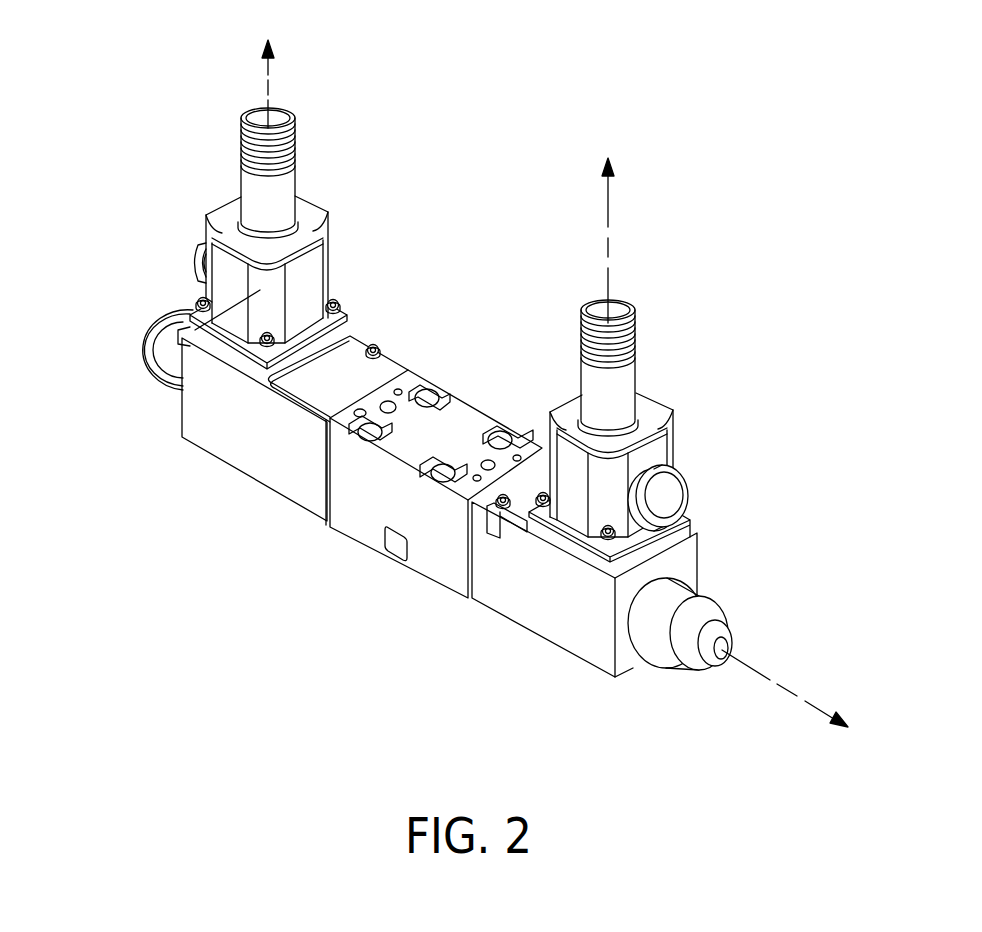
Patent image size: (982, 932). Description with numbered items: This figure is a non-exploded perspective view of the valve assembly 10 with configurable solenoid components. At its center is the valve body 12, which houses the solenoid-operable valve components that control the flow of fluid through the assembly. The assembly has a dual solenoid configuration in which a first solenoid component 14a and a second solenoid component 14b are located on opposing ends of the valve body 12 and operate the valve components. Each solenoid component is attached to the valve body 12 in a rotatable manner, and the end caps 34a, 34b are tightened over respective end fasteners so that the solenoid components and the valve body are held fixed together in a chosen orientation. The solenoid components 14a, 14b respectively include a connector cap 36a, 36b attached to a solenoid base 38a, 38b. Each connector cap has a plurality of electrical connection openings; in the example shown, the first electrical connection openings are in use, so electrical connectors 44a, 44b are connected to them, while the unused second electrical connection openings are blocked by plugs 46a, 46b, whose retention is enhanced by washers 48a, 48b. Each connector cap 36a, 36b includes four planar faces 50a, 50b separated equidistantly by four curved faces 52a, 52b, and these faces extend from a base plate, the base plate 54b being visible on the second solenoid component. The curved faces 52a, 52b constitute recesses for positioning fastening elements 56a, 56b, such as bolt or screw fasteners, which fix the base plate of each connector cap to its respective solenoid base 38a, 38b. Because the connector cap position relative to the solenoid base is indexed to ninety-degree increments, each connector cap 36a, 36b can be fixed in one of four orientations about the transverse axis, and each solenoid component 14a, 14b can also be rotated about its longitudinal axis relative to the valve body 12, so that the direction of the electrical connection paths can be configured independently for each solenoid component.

The valve assembly 10 is at (252, 596).
The valve body 12 is at (378, 530).
The first solenoid component 14a is at (540, 692).
The second solenoid component 14b is at (205, 505).
The end cap 34a is at (668, 658).
The end cap 34b is at (147, 342).
The connector cap 36a is at (648, 410).
The connector cap 36b is at (310, 223).
The solenoid base 38a is at (537, 607).
The solenoid base 38b is at (205, 426).
The electrical connector 44a is at (623, 372).
The electrical connector 44b is at (287, 183).
The plug 46a is at (662, 498).
The plug 46b is at (203, 255).
The washer 48a is at (670, 468).
The washer 48b is at (197, 280).
The planar face 50a is at (660, 452).
The planar face 50b is at (318, 265).
The curved face 52a is at (602, 472).
The curved face 52b is at (270, 296).
The base plate 54b is at (167, 316).
The fastening element 56a is at (622, 537).
The fastening element 56b is at (334, 299).